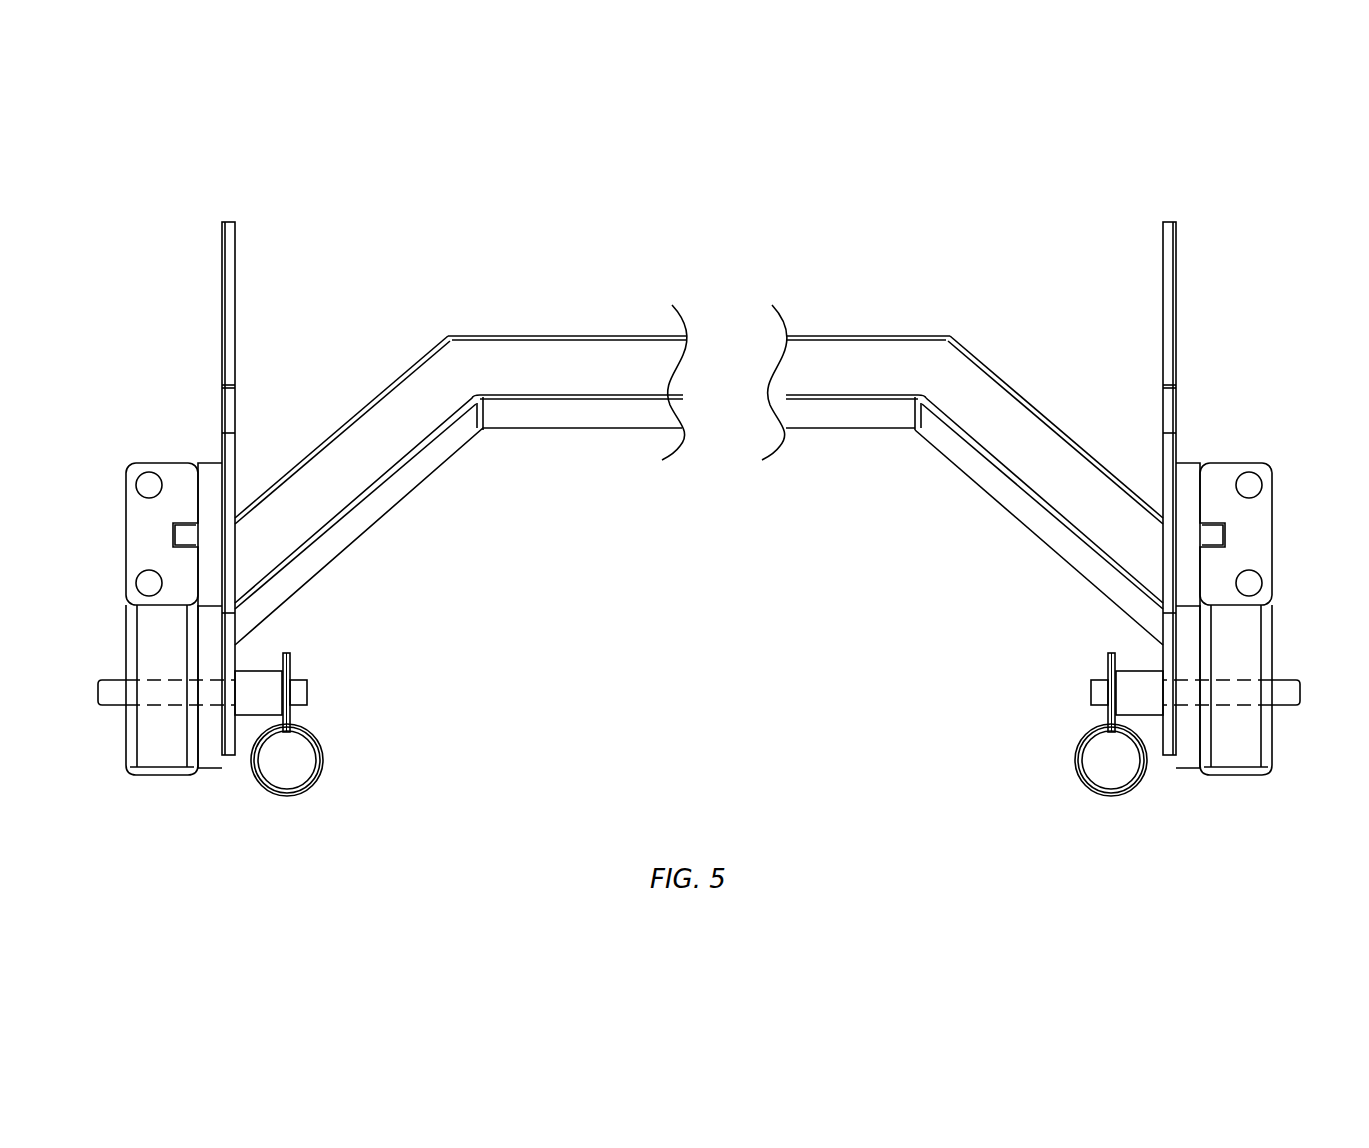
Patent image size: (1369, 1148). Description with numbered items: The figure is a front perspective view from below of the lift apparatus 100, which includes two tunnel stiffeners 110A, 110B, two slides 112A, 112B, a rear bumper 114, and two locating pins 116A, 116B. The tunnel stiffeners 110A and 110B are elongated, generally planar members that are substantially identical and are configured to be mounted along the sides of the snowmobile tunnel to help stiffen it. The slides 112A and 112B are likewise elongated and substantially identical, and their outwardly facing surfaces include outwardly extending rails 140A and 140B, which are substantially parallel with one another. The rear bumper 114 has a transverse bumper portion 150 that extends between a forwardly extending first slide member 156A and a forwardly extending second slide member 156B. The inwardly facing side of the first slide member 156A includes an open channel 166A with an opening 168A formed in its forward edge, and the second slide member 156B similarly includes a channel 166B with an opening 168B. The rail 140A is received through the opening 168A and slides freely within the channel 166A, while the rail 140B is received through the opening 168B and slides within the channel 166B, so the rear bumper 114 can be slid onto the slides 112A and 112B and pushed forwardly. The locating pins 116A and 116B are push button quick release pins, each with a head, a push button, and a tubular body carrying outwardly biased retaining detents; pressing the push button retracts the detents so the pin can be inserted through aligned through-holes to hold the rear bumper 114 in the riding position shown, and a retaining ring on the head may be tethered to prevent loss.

The lift apparatus 100 is at (1020, 178).
The tunnel stiffener 110A is at (1176, 275).
The tunnel stiffener 110B is at (222, 275).
The slide 112A is at (1188, 763).
The slide 112B is at (210, 763).
The rear bumper 114 is at (557, 350).
The locating pin 116A is at (1108, 660).
The locating pin 116B is at (290, 660).
The rail 140A is at (1207, 520).
The rail 140B is at (186, 520).
The bumper portion 150 is at (840, 417).
The first slide member 156A is at (1235, 760).
The second slide member 156B is at (163, 760).
The open channel 166A is at (1055, 463).
The channel 166B is at (342, 459).
The opening 168A is at (1036, 574).
The opening 168B is at (362, 574).